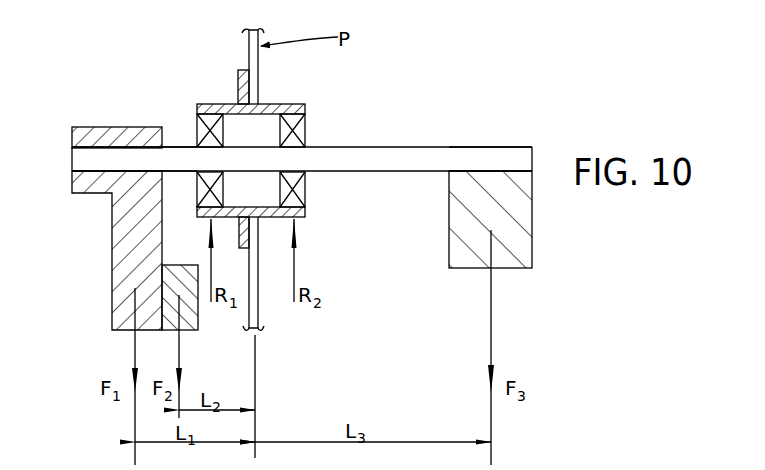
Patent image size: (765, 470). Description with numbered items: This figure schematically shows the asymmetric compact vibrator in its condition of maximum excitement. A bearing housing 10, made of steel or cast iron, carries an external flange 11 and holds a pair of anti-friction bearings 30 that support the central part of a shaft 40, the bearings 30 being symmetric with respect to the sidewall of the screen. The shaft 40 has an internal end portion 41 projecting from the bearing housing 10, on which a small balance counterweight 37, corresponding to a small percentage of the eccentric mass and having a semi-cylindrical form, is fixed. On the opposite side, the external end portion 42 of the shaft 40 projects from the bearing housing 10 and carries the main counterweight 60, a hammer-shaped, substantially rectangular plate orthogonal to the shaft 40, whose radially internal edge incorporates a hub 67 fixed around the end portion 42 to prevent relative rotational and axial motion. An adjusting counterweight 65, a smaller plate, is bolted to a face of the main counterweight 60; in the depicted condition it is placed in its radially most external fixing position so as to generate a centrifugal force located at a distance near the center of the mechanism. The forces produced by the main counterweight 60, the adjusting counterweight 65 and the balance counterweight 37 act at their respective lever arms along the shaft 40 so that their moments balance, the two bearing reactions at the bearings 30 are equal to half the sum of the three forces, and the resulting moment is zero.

The bearing housing 10 is at (296, 104).
The external flange 11 is at (237, 87).
The bearings 30 is at (309, 128).
The balance counterweight 37 is at (535, 252).
The shaft 40 is at (335, 153).
The internal end portion 41 is at (506, 153).
The external end portion 42 is at (125, 165).
The main counterweight 60 is at (127, 246).
The adjusting counterweight 65 is at (184, 297).
The hub 67 is at (100, 126).